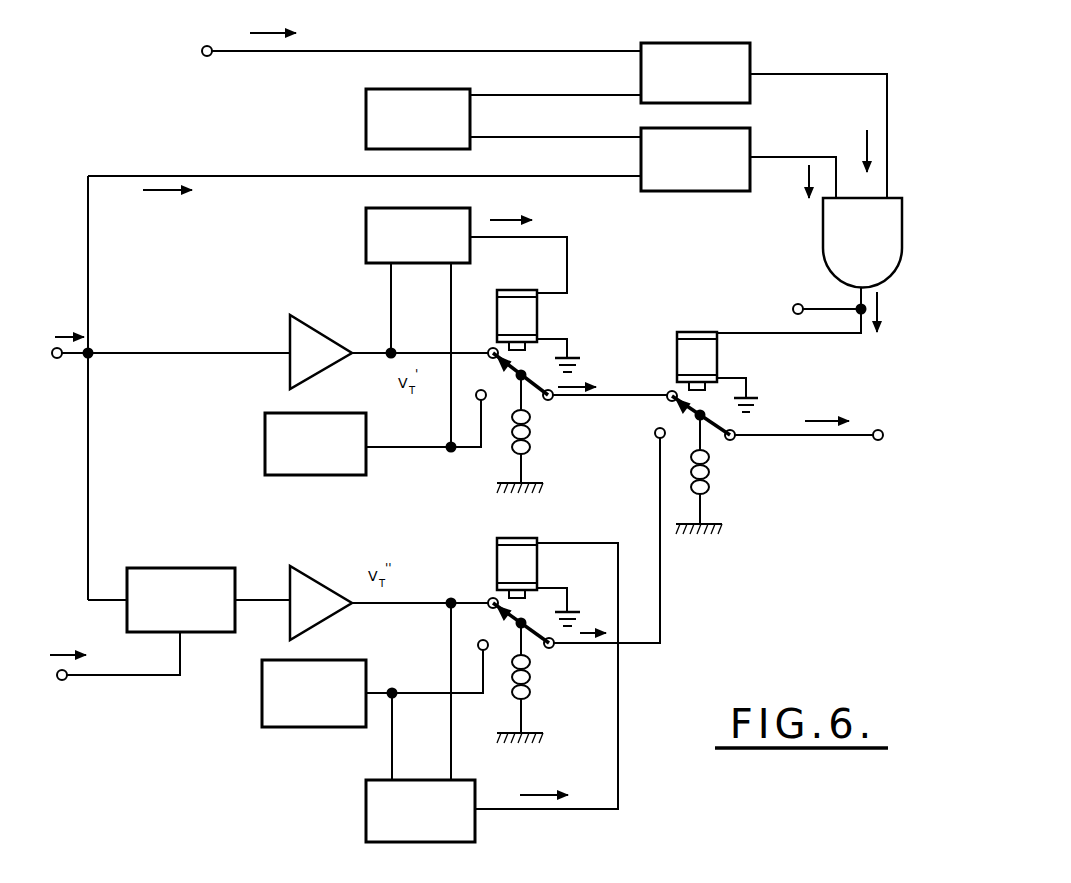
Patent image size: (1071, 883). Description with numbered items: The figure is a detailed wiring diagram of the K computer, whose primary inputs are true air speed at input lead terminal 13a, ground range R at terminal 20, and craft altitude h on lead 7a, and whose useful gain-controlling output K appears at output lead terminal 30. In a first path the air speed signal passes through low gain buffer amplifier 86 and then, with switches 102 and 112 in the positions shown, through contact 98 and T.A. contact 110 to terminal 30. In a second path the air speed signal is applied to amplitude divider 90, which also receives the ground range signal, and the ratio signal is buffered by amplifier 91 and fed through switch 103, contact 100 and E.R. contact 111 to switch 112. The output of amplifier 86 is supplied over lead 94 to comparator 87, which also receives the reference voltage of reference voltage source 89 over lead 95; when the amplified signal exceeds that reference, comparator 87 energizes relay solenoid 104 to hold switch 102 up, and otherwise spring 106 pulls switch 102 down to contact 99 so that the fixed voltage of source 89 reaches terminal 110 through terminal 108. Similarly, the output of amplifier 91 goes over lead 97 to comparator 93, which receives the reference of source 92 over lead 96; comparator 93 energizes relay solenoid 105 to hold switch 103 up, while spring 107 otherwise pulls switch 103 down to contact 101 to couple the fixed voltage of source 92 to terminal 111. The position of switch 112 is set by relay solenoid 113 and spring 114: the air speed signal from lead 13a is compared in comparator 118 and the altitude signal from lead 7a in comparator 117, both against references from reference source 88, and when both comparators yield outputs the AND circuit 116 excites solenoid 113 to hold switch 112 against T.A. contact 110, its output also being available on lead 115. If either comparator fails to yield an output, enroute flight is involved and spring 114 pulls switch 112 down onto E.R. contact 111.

The altitude input lead 7a is at (202, 51).
The input lead terminal 13a is at (62, 357).
The input terminal (R signal) 20 is at (59, 680).
The output lead terminal 30 is at (883, 435).
The amplifier 86 is at (290, 334).
The comparator 87 is at (366, 245).
The reference source 88 is at (366, 121).
The reference voltage source 89 is at (265, 442).
The amplitude divider 90 is at (176, 568).
The buffer amplifier 91 is at (310, 578).
The reference source 92 is at (262, 704).
The comparator 93 is at (366, 811).
The lead 94 is at (391, 301).
The lead 95 is at (451, 304).
The lead 96 is at (369, 762).
The lead 97 is at (452, 754).
The switch contact 98 is at (491, 348).
The contact 99 is at (479, 390).
The switch contact 100 is at (490, 599).
The contact 101 is at (478, 645).
The switch 102 is at (552, 401).
The switch 103 is at (551, 649).
The relay solenoid 104 is at (516, 290).
The relay solenoid 105 is at (515, 538).
The spring 106 is at (530, 440).
The spring 107 is at (530, 684).
The terminal T.A. 108 is at (614, 393).
The T.A. contact 110 is at (669, 390).
The E.R. contact 111 is at (656, 444).
The switch 112 is at (733, 441).
The relay solenoid 113 is at (696, 332).
The spring 114 is at (712, 488).
The lead 115 is at (797, 304).
The AND circuit 116 is at (902, 240).
The comparator 117 is at (750, 52).
The comparator 118 is at (750, 140).